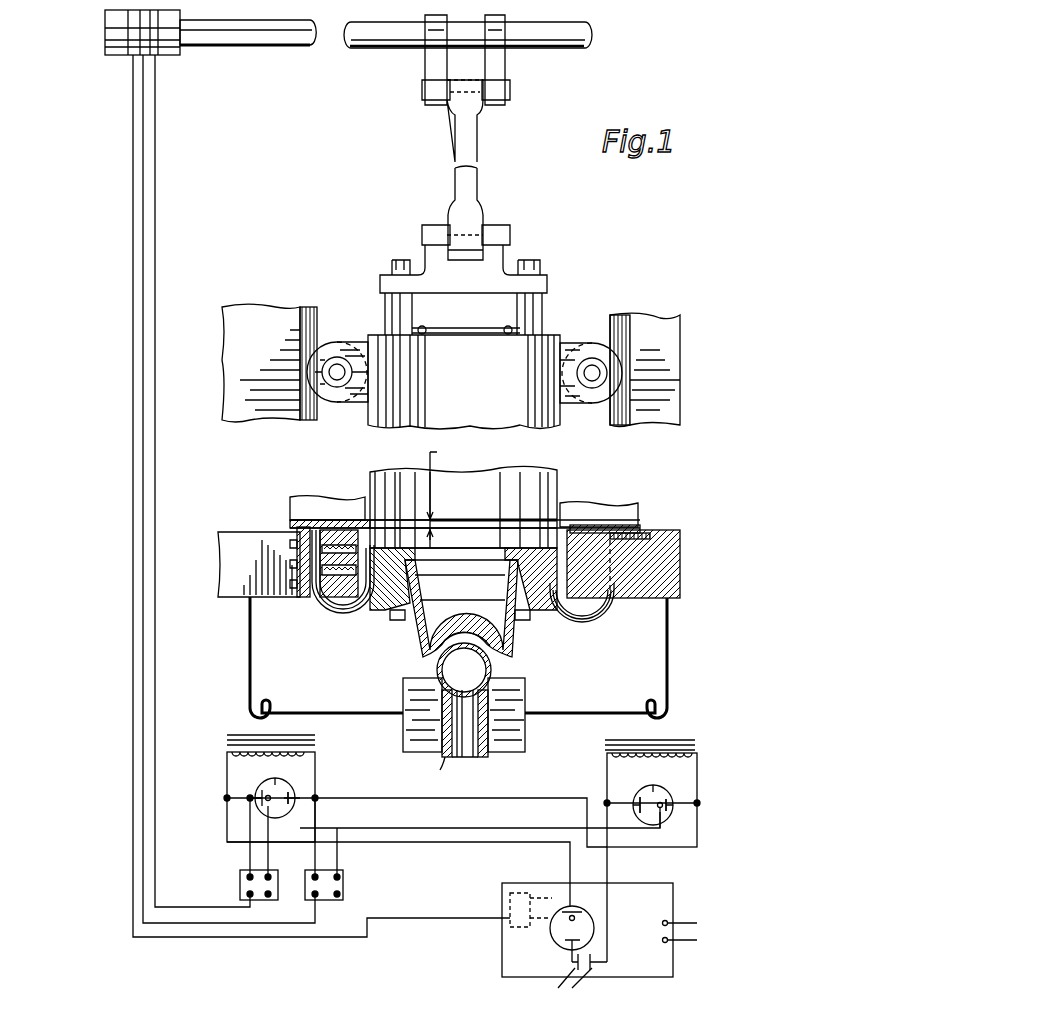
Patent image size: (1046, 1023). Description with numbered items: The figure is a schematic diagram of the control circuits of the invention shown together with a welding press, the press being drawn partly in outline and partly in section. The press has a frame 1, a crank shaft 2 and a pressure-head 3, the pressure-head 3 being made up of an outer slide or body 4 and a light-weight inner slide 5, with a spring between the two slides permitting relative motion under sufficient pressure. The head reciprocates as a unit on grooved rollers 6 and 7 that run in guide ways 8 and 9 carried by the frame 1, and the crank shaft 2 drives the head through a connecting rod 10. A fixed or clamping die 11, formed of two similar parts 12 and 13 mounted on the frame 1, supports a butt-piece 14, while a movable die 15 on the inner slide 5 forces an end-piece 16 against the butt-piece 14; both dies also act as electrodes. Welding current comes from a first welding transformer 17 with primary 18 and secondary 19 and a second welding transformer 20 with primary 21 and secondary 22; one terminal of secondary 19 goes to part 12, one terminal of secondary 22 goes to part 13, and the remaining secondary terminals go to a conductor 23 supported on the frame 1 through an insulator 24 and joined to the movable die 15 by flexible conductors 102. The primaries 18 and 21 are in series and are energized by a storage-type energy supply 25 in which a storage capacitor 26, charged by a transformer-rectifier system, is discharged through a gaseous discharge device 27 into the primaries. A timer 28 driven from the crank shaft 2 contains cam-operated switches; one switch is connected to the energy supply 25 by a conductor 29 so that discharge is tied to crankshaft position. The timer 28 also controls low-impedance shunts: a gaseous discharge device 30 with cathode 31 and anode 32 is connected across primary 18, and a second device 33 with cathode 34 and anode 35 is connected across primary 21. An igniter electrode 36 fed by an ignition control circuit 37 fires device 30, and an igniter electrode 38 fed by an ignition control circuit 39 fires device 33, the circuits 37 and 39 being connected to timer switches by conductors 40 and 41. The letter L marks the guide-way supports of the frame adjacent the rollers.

The frame 1 is at (625, 505).
The crank shaft 2 is at (590, 36).
The pressure-head 3 is at (472, 332).
The outer slide 4 is at (560, 470).
The inner slide 5 is at (388, 614).
The grooved roller 6 is at (328, 345).
The grooved roller 7 is at (592, 345).
The guide way 8 is at (318, 338).
The guide way 9 is at (613, 340).
The connecting rod 10 is at (470, 152).
The fixed or clamping die 11 is at (492, 762).
The part of clamping die 12 is at (403, 724).
The part of clamping die 13 is at (525, 728).
The butt-piece 14 is at (455, 758).
The movable die 15 is at (495, 656).
The end-piece 16 is at (492, 676).
The first welding transformer 17 is at (254, 743).
The primary 18 is at (316, 758).
The secondary 19 is at (276, 714).
The second welding transformer 20 is at (635, 749).
The primary 21 is at (697, 760).
The secondary 22 is at (668, 725).
The conductor 23 is at (245, 562).
The insulator 24 is at (300, 523).
The energy supply 25 is at (673, 895).
The storage capacitor 26 is at (595, 956).
The gaseous discharge device 27 is at (552, 942).
The timer 28 is at (105, 32).
The conductor 29 is at (133, 795).
The gaseous discharge device 30 is at (270, 810).
The cathode 31 is at (258, 790).
The anode 32 is at (289, 792).
The gaseous discharge device 33 is at (665, 812).
The cathode 34 is at (667, 797).
The anode 35 is at (638, 795).
The igniter electrode 36 is at (278, 786).
The ignition control circuit 37 is at (240, 886).
The igniter electrode 38 is at (656, 786).
The ignition control circuit 39 is at (343, 887).
The conductor 40 is at (156, 827).
The conductor 41 is at (146, 851).
The flexible conductors 102 is at (336, 613).
The load L is at (230, 320).